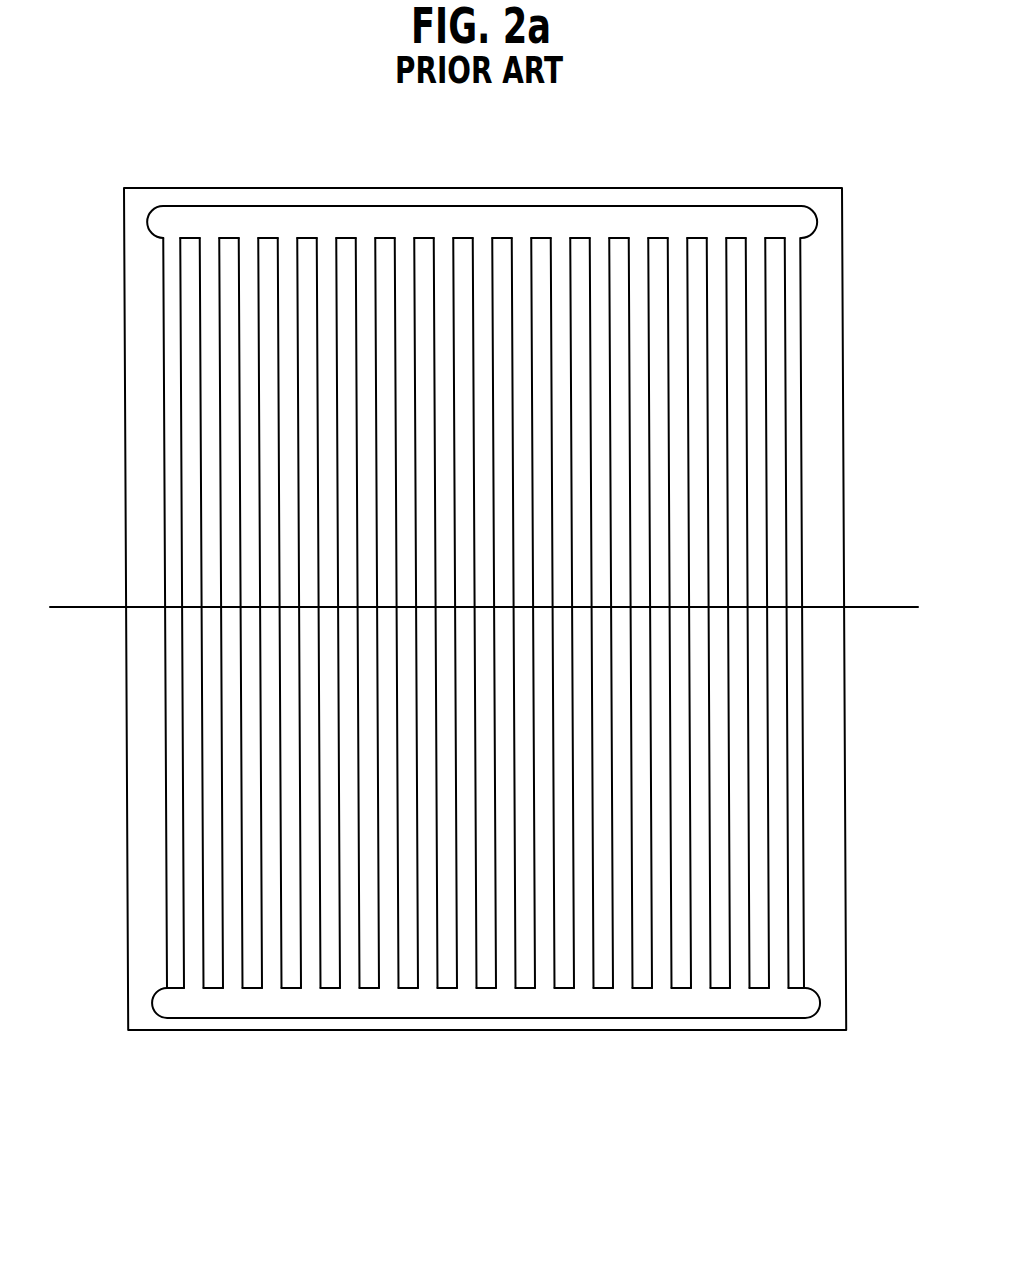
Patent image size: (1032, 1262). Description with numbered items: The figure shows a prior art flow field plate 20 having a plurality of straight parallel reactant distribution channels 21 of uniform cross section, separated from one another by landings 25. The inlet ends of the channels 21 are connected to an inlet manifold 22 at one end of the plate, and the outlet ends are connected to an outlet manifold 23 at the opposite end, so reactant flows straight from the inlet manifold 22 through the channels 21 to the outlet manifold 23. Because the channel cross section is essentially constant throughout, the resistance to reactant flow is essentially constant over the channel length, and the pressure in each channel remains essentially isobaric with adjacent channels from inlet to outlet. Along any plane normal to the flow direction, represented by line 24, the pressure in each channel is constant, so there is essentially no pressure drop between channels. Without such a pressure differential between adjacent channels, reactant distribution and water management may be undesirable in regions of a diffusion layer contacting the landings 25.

The flow field plate 20 is at (843, 346).
The reactant distribution channels 21 is at (326, 258).
The inlet manifold 22 is at (675, 215).
The outlet manifold 23 is at (680, 997).
The line 24 is at (863, 607).
The landings 25 is at (350, 972).